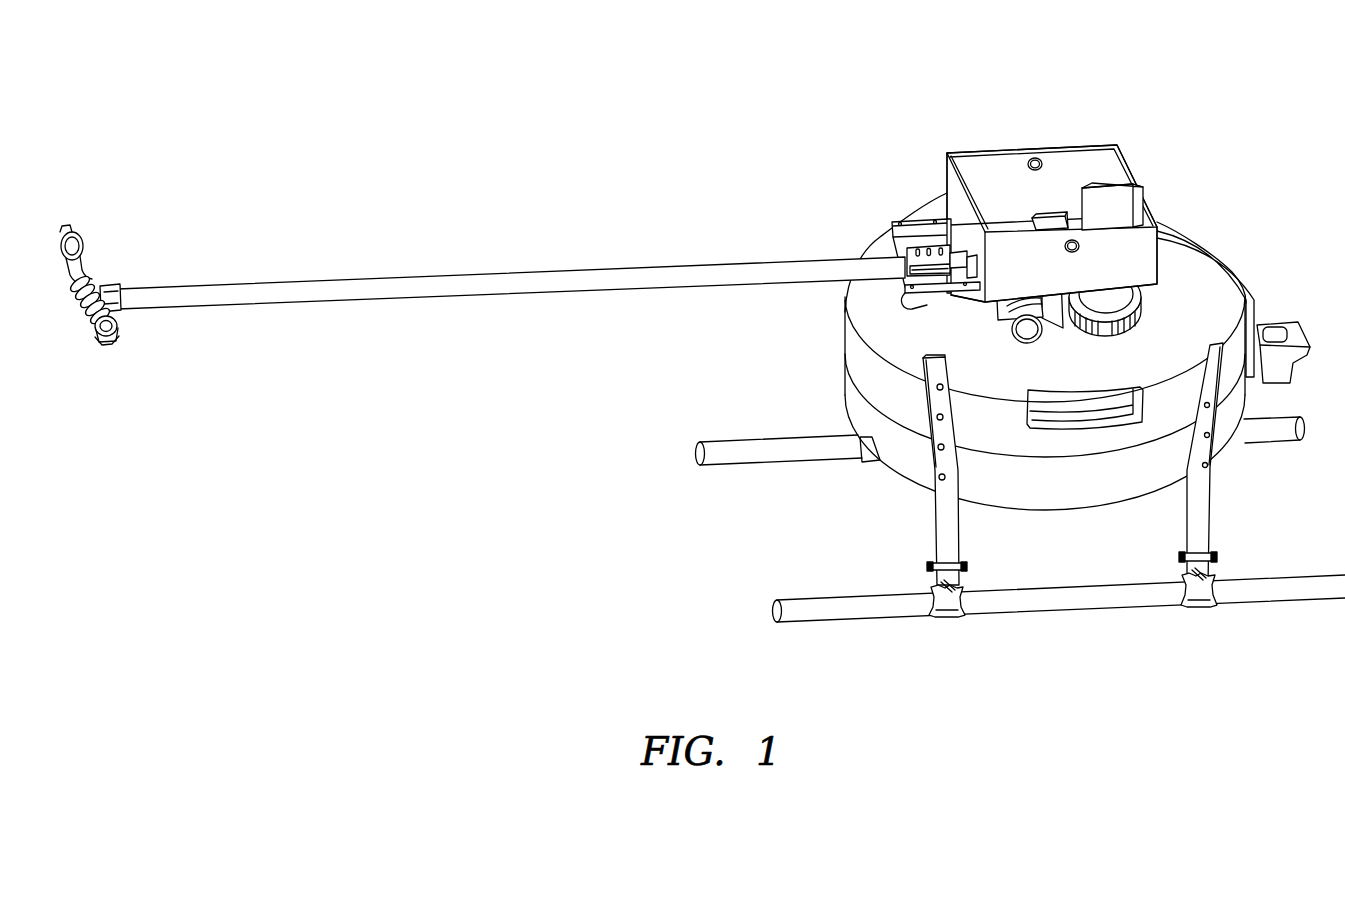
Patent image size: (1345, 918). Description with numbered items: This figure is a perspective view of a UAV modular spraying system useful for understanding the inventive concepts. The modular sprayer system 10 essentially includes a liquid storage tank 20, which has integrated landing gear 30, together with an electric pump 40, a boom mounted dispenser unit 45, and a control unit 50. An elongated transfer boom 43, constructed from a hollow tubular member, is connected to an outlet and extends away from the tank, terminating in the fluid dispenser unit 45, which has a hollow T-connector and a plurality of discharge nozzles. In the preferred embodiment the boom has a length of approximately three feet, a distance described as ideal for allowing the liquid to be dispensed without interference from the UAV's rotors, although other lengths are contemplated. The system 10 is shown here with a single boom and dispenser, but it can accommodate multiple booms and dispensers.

The modular sprayer system 10 is at (627, 111).
The liquid storage tank 20 is at (1225, 225).
The landing gear 30 is at (676, 452).
The electric pump 40 is at (1052, 221).
The elongated transfer boom 43 is at (331, 266).
The fluid dispenser unit 45 is at (108, 256).
The control unit 50 is at (1122, 205).